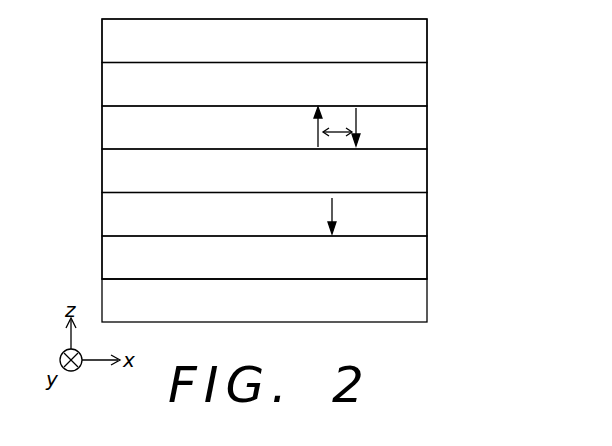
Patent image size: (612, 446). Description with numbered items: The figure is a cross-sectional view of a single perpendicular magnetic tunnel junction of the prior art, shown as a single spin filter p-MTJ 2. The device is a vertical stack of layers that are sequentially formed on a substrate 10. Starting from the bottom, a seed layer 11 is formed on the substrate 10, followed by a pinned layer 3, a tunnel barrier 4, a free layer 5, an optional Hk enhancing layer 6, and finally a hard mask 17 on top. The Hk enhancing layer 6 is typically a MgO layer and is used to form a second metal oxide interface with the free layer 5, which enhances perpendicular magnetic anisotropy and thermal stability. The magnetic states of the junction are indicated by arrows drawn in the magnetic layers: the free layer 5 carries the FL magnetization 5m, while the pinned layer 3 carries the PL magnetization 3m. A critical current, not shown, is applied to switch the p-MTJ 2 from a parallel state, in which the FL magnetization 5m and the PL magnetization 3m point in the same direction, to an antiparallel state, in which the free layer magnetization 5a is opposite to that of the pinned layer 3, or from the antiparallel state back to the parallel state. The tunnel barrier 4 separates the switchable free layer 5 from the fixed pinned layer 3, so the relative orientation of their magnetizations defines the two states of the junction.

The p-MTJ 2 is at (85, 23).
The hard mask 17 is at (413, 42).
The Hk enhancing layer 6 is at (413, 85).
The free layer 5 is at (413, 129).
The free layer magnetization in antiparallel state 5a is at (320, 127).
The FL magnetization 5m is at (369, 127).
The tunnel barrier 4 is at (413, 172).
The pinned layer 3 is at (413, 217).
The PL magnetization 3m is at (344, 216).
The seed layer 11 is at (413, 257).
The substrate 10 is at (413, 302).